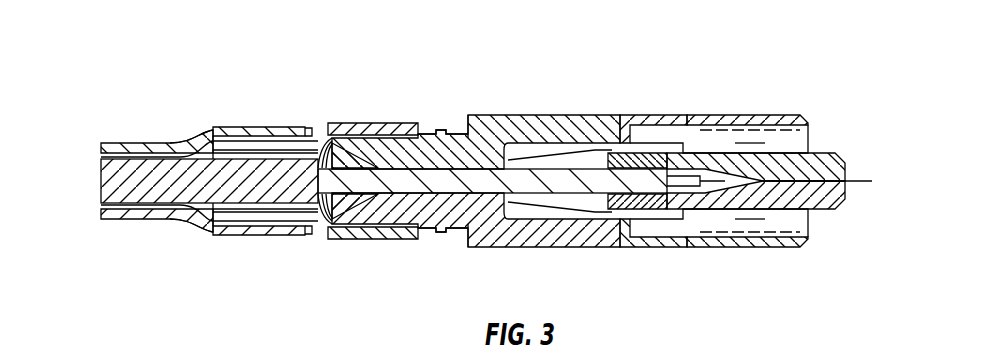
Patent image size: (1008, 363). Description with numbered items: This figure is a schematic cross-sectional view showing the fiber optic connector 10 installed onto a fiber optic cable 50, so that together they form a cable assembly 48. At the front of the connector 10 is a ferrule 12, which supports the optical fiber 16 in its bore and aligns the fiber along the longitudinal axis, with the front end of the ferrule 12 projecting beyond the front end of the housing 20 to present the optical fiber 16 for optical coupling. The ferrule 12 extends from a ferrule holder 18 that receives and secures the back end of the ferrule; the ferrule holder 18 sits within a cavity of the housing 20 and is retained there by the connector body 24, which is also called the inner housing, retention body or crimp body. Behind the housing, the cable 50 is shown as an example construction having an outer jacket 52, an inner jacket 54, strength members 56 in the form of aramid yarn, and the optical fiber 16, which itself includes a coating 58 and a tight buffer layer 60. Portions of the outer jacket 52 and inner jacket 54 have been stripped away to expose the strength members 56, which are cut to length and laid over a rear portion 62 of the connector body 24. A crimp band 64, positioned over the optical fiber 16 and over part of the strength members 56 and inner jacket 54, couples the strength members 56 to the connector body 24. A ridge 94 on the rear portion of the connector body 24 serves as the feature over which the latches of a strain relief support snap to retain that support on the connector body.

The connector 10 is at (580, 70).
The ferrule 12 is at (768, 116).
The optical fiber 16 is at (718, 186).
The ferrule holder 18 is at (576, 216).
The housing 20 is at (648, 116).
The connector body 24 is at (485, 113).
The cable assembly 48 is at (171, 96).
The fiber optic cable 50 is at (92, 158).
The outer jacket 52 is at (228, 126).
The inner jacket 54 is at (233, 218).
The strength members 56 is at (306, 224).
The coating 58 is at (675, 210).
The buffer layer 60 is at (480, 242).
The rear portion 62 is at (386, 122).
The crimp band 64 is at (323, 140).
The ridge 94 is at (442, 131).